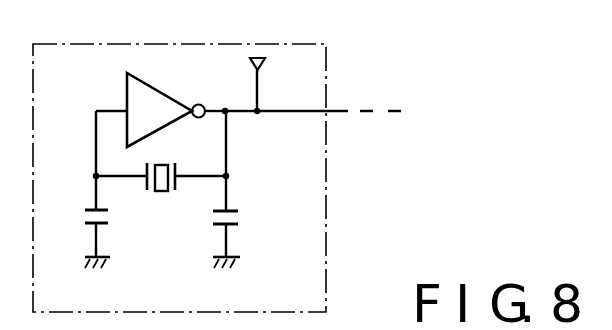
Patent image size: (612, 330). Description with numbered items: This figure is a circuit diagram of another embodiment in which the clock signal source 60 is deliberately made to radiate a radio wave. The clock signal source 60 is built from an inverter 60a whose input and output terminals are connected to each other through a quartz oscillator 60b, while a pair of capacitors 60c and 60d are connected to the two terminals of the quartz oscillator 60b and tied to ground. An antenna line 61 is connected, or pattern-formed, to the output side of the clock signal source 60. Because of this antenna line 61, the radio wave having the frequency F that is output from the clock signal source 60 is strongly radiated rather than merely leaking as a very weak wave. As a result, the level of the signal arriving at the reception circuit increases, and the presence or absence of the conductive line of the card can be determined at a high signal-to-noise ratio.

The clock signal source 60 is at (327, 63).
The inverter 60a is at (172, 107).
The quartz oscillator 60b is at (161, 193).
The capacitor 60c is at (86, 211).
The capacitor 60d is at (233, 210).
The antenna line 61 is at (258, 86).